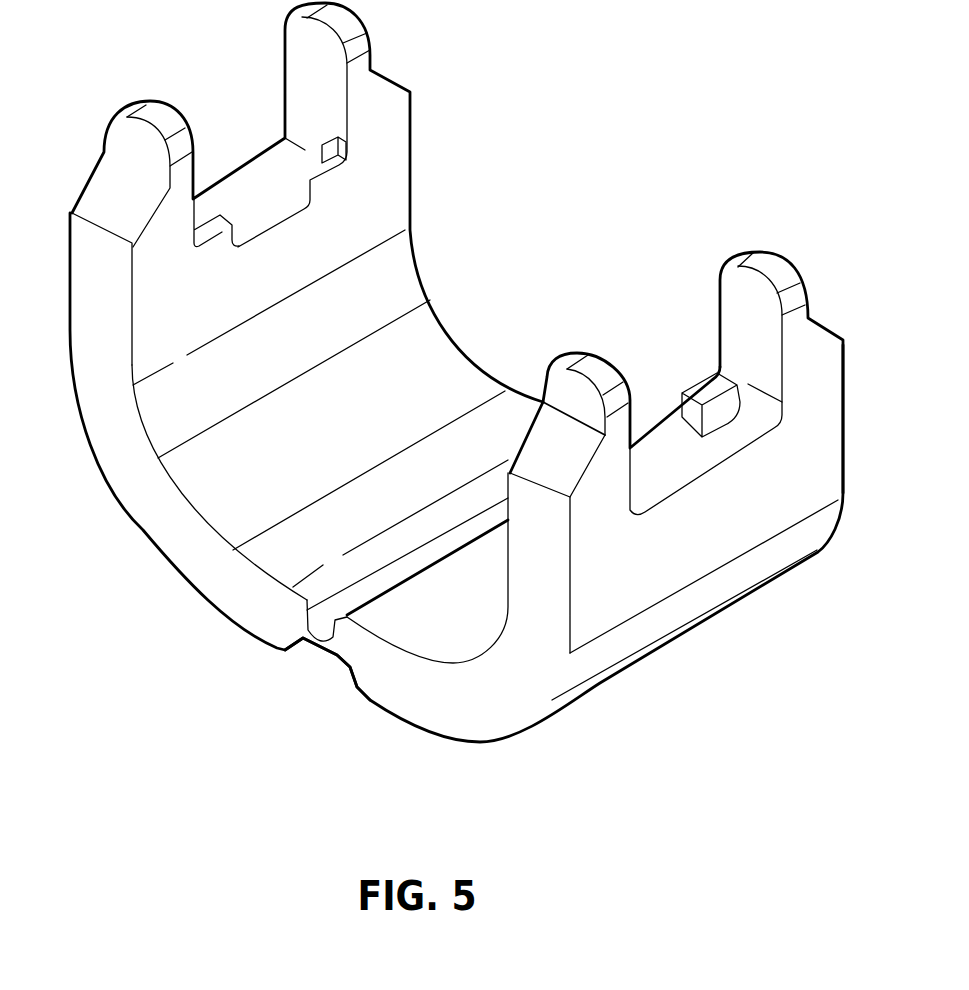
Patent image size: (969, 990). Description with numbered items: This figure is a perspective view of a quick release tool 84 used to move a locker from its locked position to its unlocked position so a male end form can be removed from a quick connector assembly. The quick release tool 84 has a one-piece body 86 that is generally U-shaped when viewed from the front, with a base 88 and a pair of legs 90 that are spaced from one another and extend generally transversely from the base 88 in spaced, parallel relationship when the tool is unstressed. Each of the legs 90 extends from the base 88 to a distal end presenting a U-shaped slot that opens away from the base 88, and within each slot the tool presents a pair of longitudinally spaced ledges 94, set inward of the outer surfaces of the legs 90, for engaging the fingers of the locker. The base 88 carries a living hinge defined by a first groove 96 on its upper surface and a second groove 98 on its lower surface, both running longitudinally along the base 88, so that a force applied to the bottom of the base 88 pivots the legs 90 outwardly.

The quick release tool 84 is at (568, 190).
The body 86 is at (843, 438).
The base 88 is at (417, 703).
The legs 90 is at (82, 290).
The ledges 94 is at (212, 230).
The first groove 96 is at (332, 620).
The second groove 98 is at (335, 653).